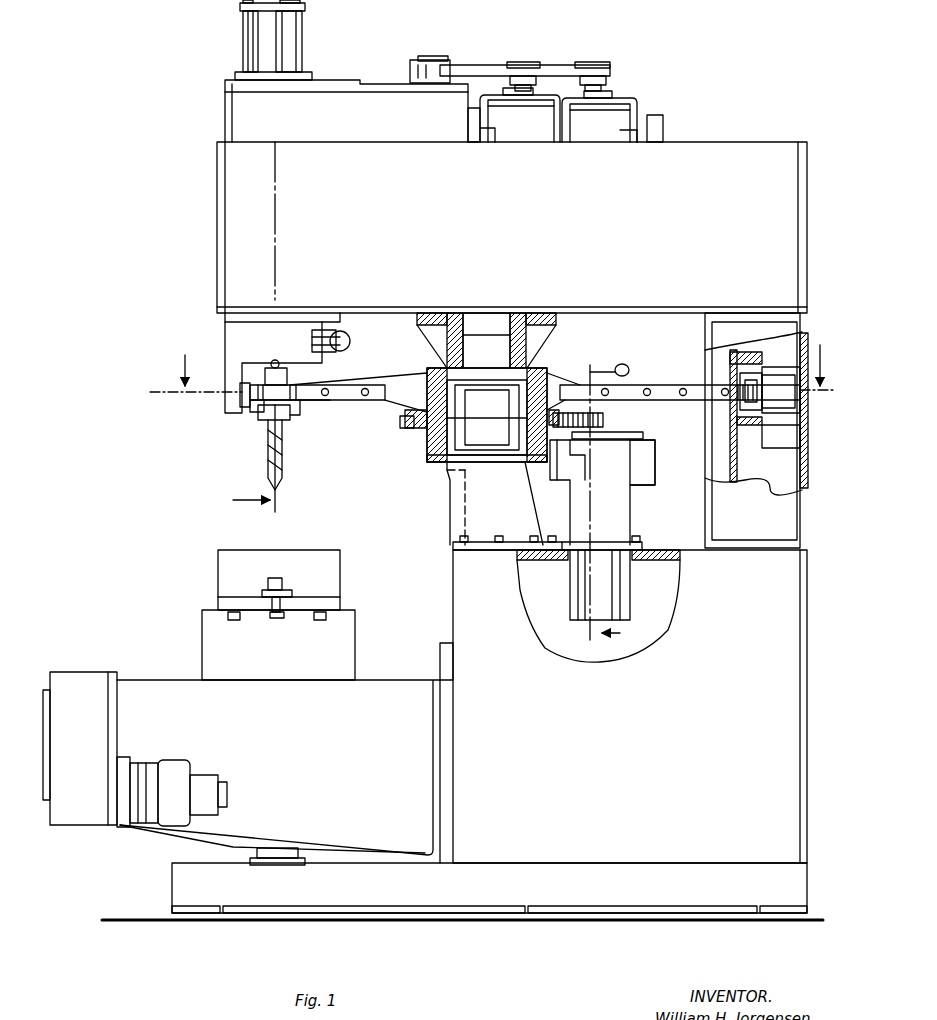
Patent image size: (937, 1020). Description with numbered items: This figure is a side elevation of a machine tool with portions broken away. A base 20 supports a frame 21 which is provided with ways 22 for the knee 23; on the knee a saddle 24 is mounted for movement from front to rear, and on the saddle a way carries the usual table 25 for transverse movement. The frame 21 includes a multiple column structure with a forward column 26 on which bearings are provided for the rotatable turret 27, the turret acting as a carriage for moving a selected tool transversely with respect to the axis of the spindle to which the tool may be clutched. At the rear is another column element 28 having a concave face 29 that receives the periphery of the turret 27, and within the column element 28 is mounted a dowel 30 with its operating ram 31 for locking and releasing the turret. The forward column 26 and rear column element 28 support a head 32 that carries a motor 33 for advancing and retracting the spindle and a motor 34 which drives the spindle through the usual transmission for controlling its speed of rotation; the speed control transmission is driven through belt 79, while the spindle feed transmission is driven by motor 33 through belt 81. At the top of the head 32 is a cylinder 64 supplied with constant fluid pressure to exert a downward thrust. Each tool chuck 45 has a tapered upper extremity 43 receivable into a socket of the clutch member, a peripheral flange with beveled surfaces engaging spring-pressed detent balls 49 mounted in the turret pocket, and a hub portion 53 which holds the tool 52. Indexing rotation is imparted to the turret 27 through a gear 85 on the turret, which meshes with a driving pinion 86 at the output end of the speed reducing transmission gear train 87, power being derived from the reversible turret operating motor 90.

The base 20 is at (437, 893).
The frame 21 is at (637, 767).
The ways 22 is at (445, 659).
The knee 23 is at (405, 806).
The saddle 24 is at (250, 852).
The table 25 is at (215, 645).
The forward column 26 is at (480, 493).
The turret 27 is at (652, 386).
The column element 28 is at (745, 510).
The concave face 29 is at (720, 460).
The dowel 30 is at (732, 410).
The operating ram 31 is at (778, 378).
The head 32 is at (738, 165).
The motor 33 is at (522, 131).
The motor 34 is at (632, 104).
The tapered upper extremity 43 is at (284, 372).
The tool chuck 45 is at (291, 414).
The spring-pressed detent balls 49 is at (256, 413).
The tool 52 is at (268, 468).
The hub portion 53 is at (268, 421).
The cylinder 64 is at (283, 58).
The belt 79 is at (548, 73).
The belt 81 is at (478, 74).
The turret gear 85 is at (410, 430).
The driving pinion 86 is at (606, 420).
The speed reducing transmission gear train 87 is at (650, 468).
The reversible turret operating motor 90 is at (626, 612).